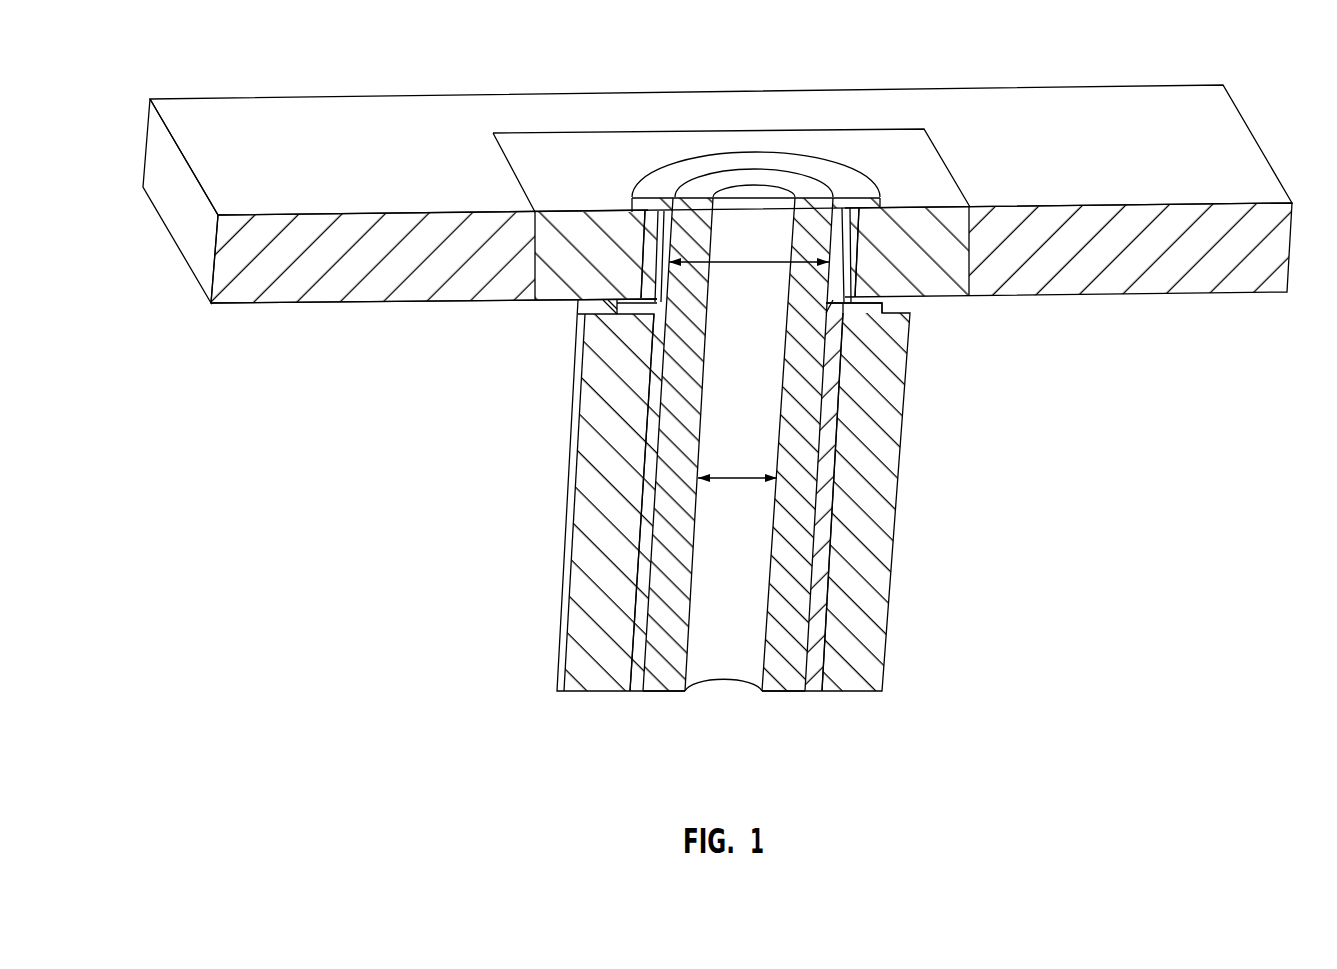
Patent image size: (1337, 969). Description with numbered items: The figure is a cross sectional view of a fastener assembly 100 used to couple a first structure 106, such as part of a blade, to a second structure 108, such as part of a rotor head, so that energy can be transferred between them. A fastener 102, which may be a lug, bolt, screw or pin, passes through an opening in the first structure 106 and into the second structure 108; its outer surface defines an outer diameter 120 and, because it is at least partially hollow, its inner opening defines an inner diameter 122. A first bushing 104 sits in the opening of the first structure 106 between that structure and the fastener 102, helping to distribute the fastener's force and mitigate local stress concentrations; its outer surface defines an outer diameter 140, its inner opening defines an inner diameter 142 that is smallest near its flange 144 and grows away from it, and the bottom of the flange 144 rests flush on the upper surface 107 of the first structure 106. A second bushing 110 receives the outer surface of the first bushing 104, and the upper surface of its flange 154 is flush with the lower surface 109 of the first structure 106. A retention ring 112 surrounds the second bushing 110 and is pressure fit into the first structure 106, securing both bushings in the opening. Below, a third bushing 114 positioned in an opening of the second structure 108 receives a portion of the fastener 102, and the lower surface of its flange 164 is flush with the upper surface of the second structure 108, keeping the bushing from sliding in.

The fastener assembly 100 is at (806, 138).
The fastener 102 is at (710, 195).
The first bushing 104 is at (657, 190).
The first structure 106 is at (406, 117).
The upper surface 107 is at (275, 178).
The second structure 108 is at (868, 617).
The lower surface 109 is at (278, 304).
The second bushing 110 is at (650, 315).
The retention ring 112 is at (852, 318).
The third bushing 114 is at (850, 440).
The outer diameter 120 is at (642, 495).
The inner diameter 122 is at (725, 477).
The outer diameter 140 is at (642, 236).
The inner diameter 142 is at (742, 260).
The flange 144 is at (852, 192).
The flange 154 is at (588, 310).
The flange 164 is at (843, 332).